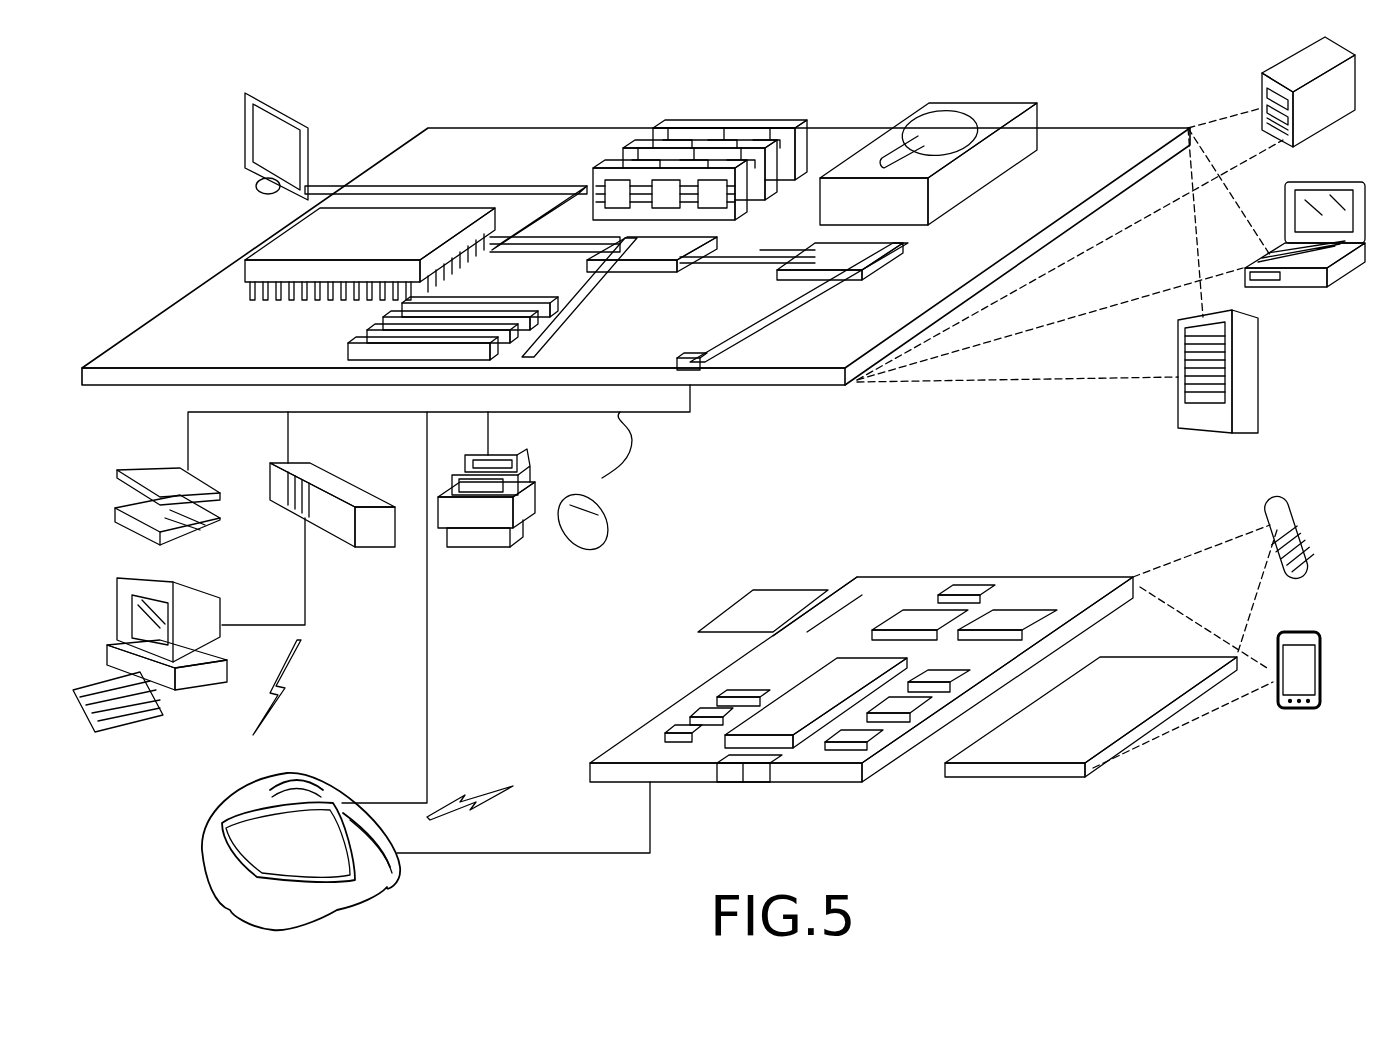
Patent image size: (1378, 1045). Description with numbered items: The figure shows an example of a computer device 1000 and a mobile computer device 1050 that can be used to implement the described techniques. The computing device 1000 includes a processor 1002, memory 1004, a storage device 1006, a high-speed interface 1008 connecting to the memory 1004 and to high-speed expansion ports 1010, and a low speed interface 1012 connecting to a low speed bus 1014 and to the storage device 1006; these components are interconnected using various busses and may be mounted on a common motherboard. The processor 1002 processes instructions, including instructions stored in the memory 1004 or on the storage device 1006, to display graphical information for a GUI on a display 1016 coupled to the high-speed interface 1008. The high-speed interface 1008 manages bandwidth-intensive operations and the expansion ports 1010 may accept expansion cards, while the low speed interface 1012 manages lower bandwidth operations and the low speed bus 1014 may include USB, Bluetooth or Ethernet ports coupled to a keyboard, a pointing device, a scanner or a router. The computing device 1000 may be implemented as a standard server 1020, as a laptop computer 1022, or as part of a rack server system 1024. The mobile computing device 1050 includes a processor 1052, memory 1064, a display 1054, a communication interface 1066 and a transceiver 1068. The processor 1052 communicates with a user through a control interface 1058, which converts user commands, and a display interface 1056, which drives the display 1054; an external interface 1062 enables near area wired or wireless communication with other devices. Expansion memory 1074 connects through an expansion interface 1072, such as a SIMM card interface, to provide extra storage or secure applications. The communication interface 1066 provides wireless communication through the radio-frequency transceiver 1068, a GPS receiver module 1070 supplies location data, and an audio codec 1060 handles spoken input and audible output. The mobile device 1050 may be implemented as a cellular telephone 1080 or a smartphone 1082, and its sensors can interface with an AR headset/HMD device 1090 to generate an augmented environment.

The computer device 1000 is at (376, 66).
The processor 1002 is at (270, 246).
The memory 1004 is at (732, 118).
The storage device 1006 is at (965, 100).
The high-speed interface 1008 is at (663, 250).
The high-speed expansion ports 1010 is at (374, 326).
The low speed interface 1012 is at (812, 255).
The low speed bus 1014 is at (688, 355).
The display 1016 is at (248, 95).
The standard server 1020 is at (1282, 70).
The laptop computer 1022 is at (1345, 180).
The rack server system 1024 is at (1262, 372).
The mobile computer device 1050 is at (1173, 774).
The processor 1052 is at (785, 705).
The display 1054 is at (1135, 668).
The display interface 1056 is at (878, 752).
The control interface 1058 is at (918, 716).
The audio codec 1060 is at (948, 668).
The external interface 1062 is at (743, 784).
The memory 1064 is at (690, 712).
The communication interface 1066 is at (1015, 607).
The transceiver 1068 is at (920, 612).
The GPS receiver module 1070 is at (973, 590).
The expansion interface 1072 is at (842, 585).
The expansion memory 1074 is at (757, 590).
The cellular telephone 1080 is at (1280, 495).
The smartphone 1082 is at (1292, 632).
The AR headset/HMD device 1090 is at (414, 892).